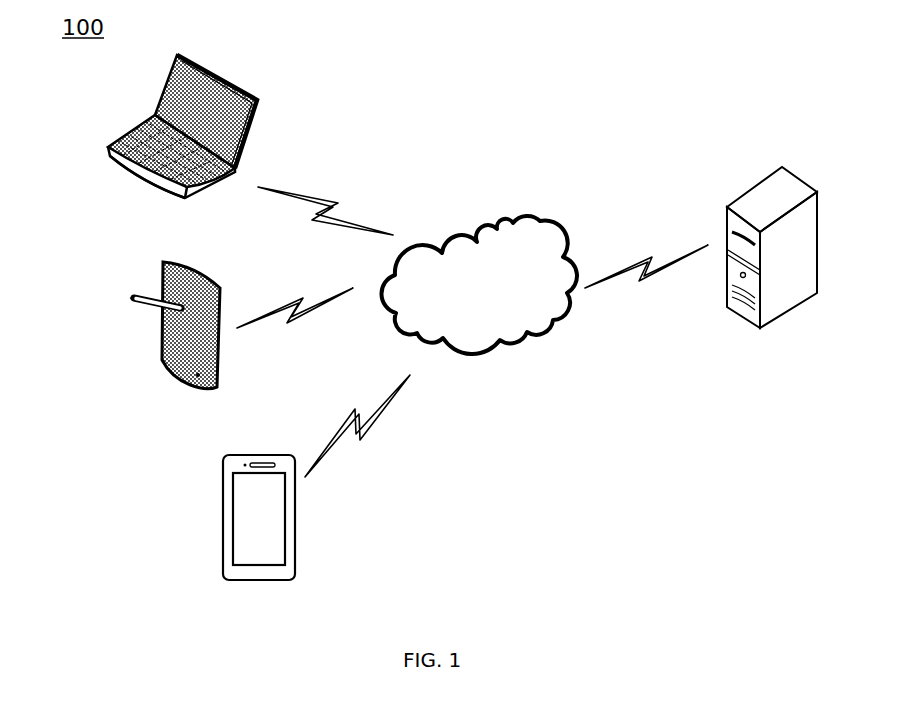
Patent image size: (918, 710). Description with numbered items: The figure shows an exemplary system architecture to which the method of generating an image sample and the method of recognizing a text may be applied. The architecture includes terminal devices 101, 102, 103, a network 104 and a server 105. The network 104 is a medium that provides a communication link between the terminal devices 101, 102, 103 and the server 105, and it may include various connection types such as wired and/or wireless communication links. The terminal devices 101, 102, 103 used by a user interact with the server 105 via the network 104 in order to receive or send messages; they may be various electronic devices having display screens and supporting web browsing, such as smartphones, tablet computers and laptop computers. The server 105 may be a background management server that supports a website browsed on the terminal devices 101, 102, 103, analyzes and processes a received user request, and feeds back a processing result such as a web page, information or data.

The terminal device 101 is at (231, 517).
The terminal device 102 is at (172, 332).
The terminal device 103 is at (182, 138).
The network 104 is at (479, 285).
The server 105 is at (772, 270).